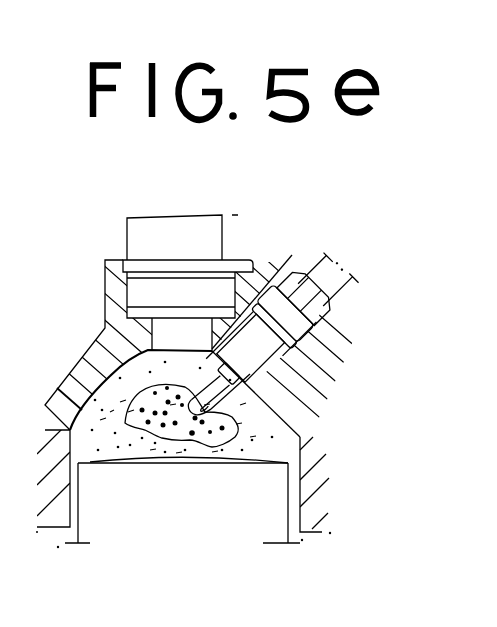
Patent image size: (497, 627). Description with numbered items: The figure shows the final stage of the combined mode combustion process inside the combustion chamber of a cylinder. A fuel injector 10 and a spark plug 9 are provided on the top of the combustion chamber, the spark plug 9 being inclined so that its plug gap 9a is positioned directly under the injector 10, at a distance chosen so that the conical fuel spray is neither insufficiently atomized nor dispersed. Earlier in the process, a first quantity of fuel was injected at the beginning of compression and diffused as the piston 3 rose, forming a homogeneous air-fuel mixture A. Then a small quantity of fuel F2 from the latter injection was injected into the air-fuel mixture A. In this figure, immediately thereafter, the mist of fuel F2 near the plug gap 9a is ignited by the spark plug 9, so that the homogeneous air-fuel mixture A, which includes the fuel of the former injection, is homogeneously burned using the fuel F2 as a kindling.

The fuel injector 10 is at (138, 243).
The spark plug 9 is at (284, 282).
The plug gap 9a is at (300, 438).
The piston 3 is at (279, 511).
The air-fuel mixture A is at (250, 447).
The fuel F2 is at (192, 435).